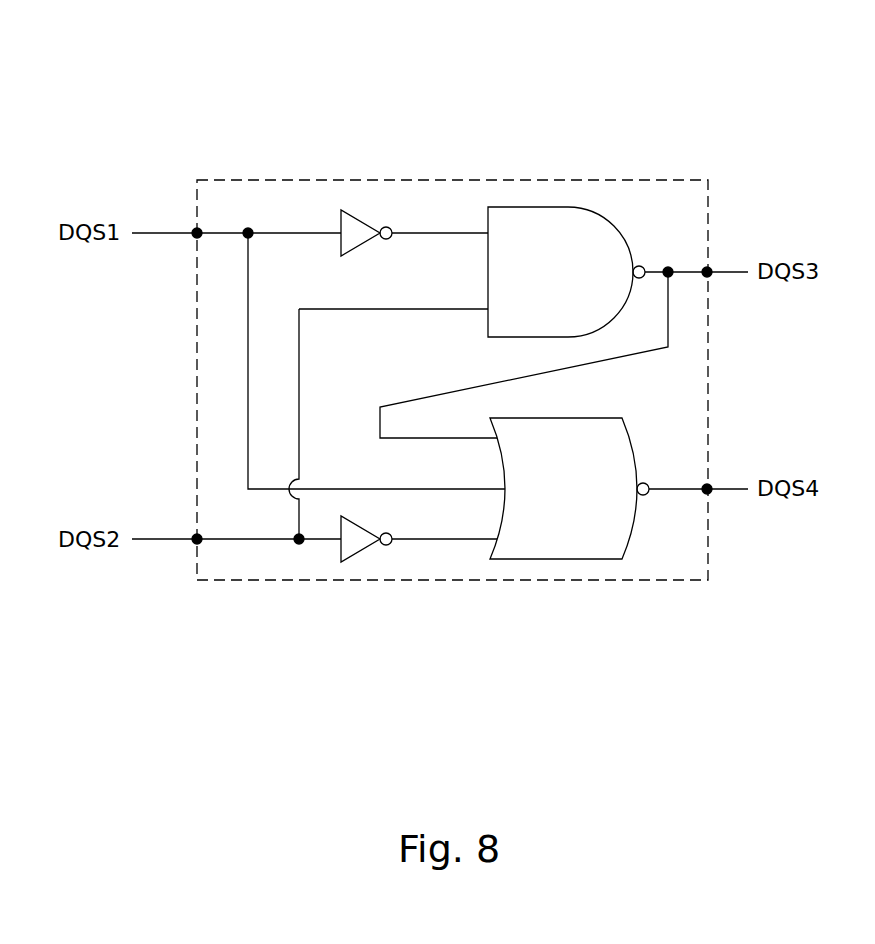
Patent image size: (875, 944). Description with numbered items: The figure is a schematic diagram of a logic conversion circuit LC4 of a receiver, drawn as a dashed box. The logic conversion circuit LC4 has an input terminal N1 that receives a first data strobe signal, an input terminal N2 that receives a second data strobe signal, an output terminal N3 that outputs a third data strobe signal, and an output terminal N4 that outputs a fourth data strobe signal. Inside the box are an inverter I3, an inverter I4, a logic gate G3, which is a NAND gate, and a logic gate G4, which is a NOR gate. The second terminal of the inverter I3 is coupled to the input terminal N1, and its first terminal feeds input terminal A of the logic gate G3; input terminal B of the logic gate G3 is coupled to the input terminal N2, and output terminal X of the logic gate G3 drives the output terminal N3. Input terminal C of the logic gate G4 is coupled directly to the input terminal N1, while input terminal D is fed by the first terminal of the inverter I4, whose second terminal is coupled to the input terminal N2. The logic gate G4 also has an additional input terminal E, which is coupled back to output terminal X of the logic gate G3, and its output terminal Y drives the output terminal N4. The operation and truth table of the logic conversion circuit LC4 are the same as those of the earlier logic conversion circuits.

The logic conversion circuit LC4 is at (760, 108).
The logic gate G3 is at (557, 207).
The logic gate G4 is at (542, 560).
The inverter I3 is at (362, 243).
The inverter I4 is at (365, 527).
The input terminal N1 is at (195, 238).
The input terminal N2 is at (195, 544).
The output terminal N3 is at (710, 276).
The output terminal N4 is at (710, 493).